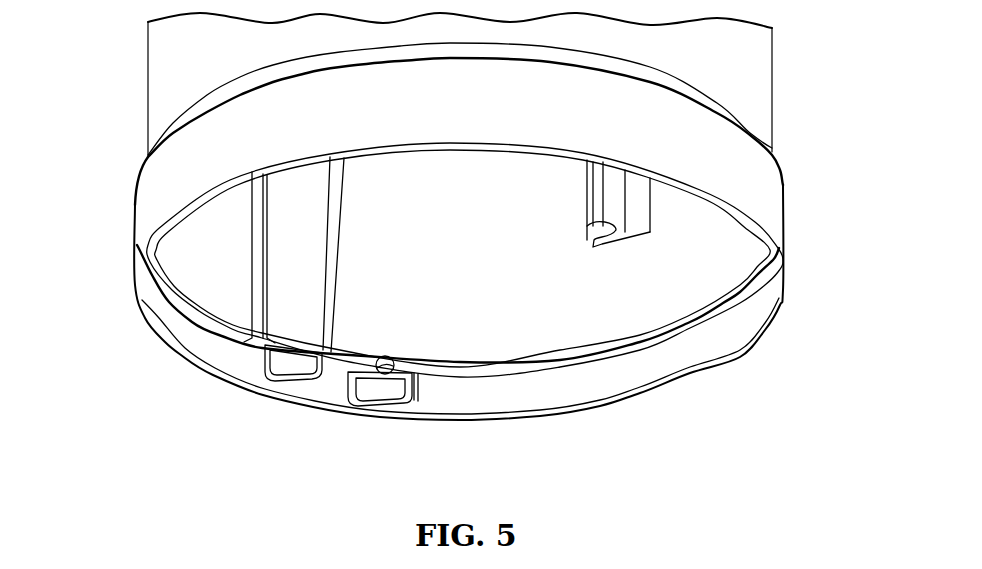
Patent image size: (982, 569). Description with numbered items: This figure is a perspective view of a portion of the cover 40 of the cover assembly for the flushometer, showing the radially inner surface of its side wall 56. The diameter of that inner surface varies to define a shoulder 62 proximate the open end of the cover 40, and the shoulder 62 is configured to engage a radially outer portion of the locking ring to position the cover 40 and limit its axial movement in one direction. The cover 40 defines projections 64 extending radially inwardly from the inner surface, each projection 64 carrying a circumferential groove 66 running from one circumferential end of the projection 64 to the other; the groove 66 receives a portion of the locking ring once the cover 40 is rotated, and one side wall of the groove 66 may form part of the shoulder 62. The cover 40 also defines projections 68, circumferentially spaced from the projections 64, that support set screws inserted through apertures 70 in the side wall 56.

The cover 40 is at (781, 96).
The side wall 56 is at (182, 70).
The shoulder 62 is at (538, 362).
The projection 64 is at (282, 295).
The circumferential groove 66 is at (293, 342).
The projection 68 is at (387, 386).
The aperture 70 is at (378, 365).